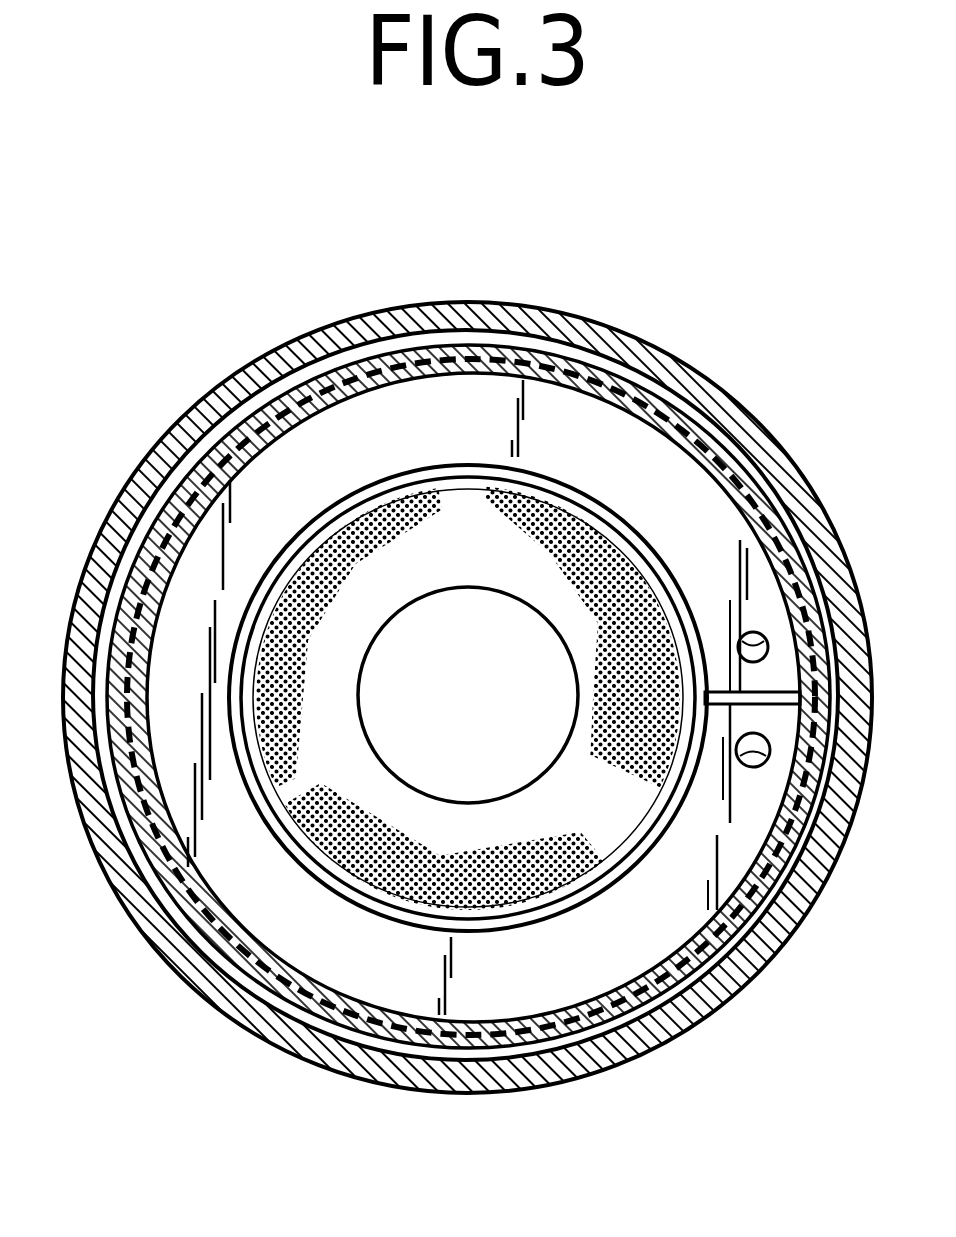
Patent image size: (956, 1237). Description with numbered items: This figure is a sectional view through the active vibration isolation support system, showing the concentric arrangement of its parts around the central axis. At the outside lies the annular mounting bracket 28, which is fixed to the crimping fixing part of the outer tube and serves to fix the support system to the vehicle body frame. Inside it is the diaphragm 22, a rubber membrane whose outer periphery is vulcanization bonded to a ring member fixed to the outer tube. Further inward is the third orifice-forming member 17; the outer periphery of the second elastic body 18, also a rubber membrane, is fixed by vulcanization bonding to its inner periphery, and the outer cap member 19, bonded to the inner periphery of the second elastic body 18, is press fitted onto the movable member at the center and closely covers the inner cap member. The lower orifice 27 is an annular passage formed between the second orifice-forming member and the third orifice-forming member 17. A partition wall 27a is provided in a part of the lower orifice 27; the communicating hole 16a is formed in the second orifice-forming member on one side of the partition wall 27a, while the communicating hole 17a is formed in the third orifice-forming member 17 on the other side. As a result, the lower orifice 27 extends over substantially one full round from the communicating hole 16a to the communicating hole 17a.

The mounting bracket 28 is at (688, 370).
The diaphragm 22 is at (303, 400).
The lower orifice 27 is at (432, 442).
The third orifice-forming member 17 is at (468, 474).
The second elastic body 18 is at (370, 826).
The outer cap member 19 is at (492, 722).
The partition wall 27a is at (713, 693).
The communicating hole 16a is at (735, 633).
The communicating hole 17a is at (725, 768).